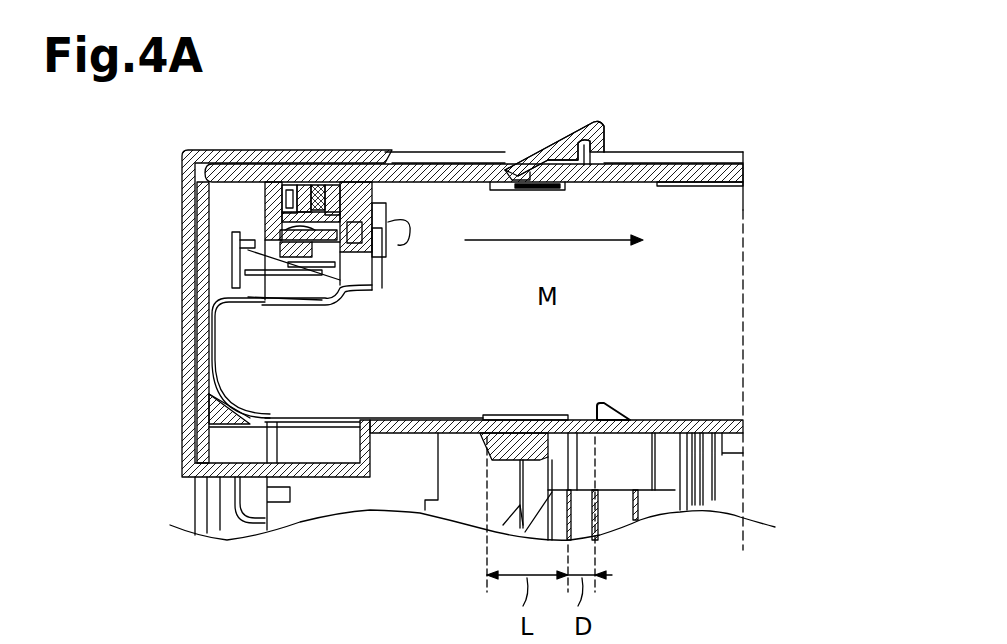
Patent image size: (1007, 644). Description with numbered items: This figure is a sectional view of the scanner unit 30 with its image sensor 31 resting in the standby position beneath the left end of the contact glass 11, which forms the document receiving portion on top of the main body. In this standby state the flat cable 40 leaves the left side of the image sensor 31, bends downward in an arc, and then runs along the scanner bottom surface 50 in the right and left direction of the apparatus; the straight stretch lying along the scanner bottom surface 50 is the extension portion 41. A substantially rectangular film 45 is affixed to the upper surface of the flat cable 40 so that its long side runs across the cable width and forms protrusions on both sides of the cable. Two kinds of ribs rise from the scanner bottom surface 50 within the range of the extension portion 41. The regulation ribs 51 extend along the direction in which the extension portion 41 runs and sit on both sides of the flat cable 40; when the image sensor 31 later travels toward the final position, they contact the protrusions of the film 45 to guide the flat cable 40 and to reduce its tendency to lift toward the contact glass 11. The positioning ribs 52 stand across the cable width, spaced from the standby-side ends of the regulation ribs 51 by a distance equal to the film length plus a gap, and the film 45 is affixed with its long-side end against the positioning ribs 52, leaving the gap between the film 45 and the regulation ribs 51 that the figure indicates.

The contact glass 11 is at (688, 180).
The scanner unit 30 is at (237, 216).
The image sensor 31 is at (316, 182).
The flat cable 40 is at (228, 385).
The extension portion 41 is at (424, 415).
The film 45 is at (531, 419).
The scanner bottom surface 50 is at (733, 445).
The regulation ribs 51 is at (598, 412).
The positioning ribs 52 is at (483, 415).